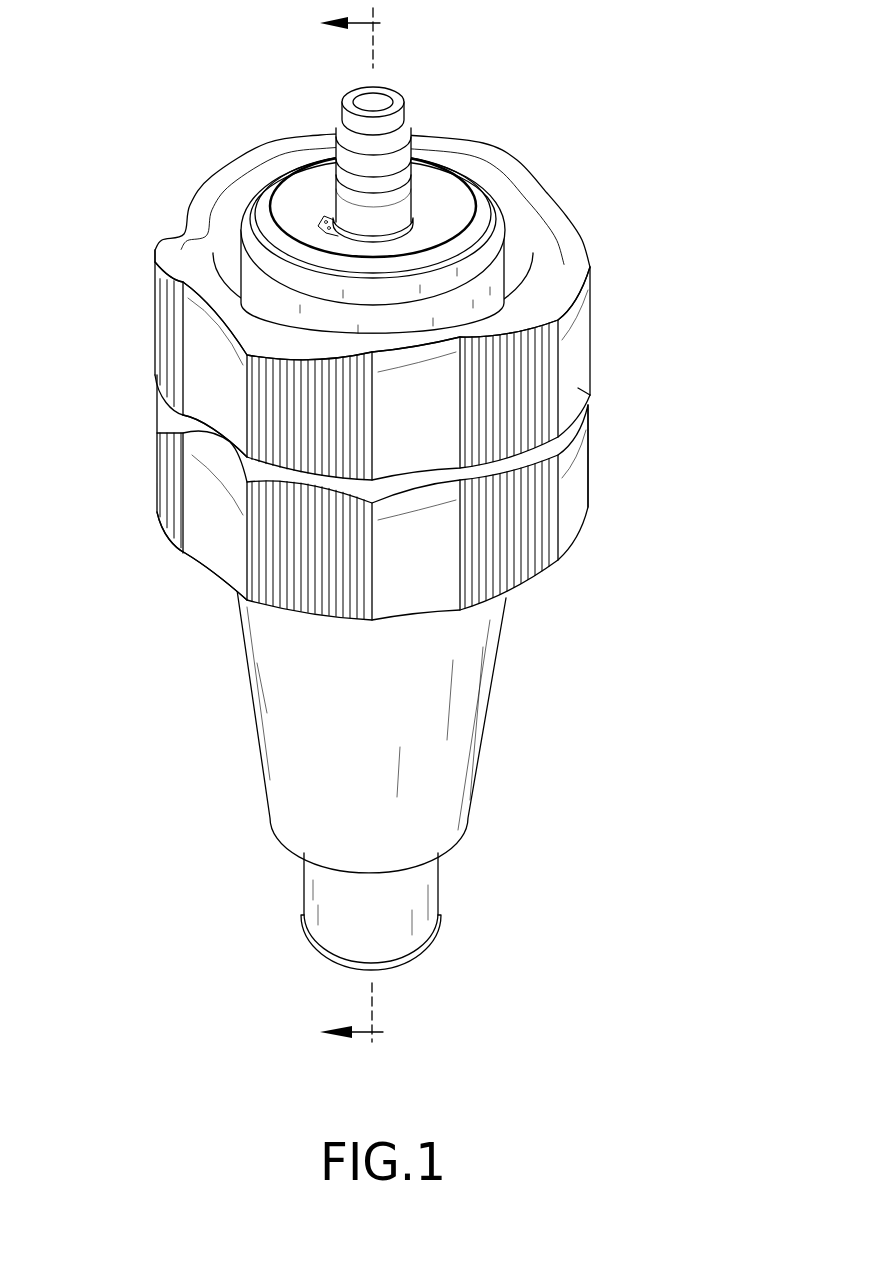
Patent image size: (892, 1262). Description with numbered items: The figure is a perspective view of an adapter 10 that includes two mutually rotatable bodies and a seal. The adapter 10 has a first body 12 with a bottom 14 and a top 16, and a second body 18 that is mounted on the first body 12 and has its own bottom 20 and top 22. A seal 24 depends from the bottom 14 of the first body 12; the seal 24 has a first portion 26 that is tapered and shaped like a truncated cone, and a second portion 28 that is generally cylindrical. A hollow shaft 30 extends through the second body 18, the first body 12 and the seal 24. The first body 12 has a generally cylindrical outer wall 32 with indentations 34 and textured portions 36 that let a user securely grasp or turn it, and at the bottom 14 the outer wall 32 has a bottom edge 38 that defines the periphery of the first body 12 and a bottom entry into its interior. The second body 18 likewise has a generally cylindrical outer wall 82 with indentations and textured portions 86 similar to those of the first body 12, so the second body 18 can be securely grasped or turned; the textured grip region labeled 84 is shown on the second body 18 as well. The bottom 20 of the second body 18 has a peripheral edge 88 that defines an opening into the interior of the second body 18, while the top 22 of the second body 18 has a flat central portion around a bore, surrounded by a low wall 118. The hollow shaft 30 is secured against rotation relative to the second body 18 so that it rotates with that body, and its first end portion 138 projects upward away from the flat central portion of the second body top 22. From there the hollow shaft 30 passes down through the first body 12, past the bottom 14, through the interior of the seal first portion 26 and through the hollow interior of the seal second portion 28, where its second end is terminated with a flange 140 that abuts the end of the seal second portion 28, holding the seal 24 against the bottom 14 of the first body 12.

The adapter 10 is at (411, 528).
The first body 12 is at (414, 690).
The bottom 14 is at (386, 531).
The top 16 is at (580, 387).
The second body 18 is at (408, 307).
The bottom 20 is at (590, 370).
The top 22 is at (560, 210).
The seal 24 is at (422, 797).
The first portion 26 is at (280, 753).
The second portion 28 is at (365, 929).
The hollow shaft 30 is at (364, 141).
The outer wall 32 is at (590, 445).
The indentations 34 is at (215, 530).
The textured portions 36 is at (167, 487).
The bottom edge 38 is at (228, 578).
The outer wall 82 is at (590, 303).
The knurled grip portion 84 is at (207, 372).
The textured portions 86 is at (157, 297).
The peripheral edge 88 is at (200, 428).
The low wall 118 is at (487, 193).
The first end portion 138 is at (343, 157).
The flange 140 is at (400, 960).